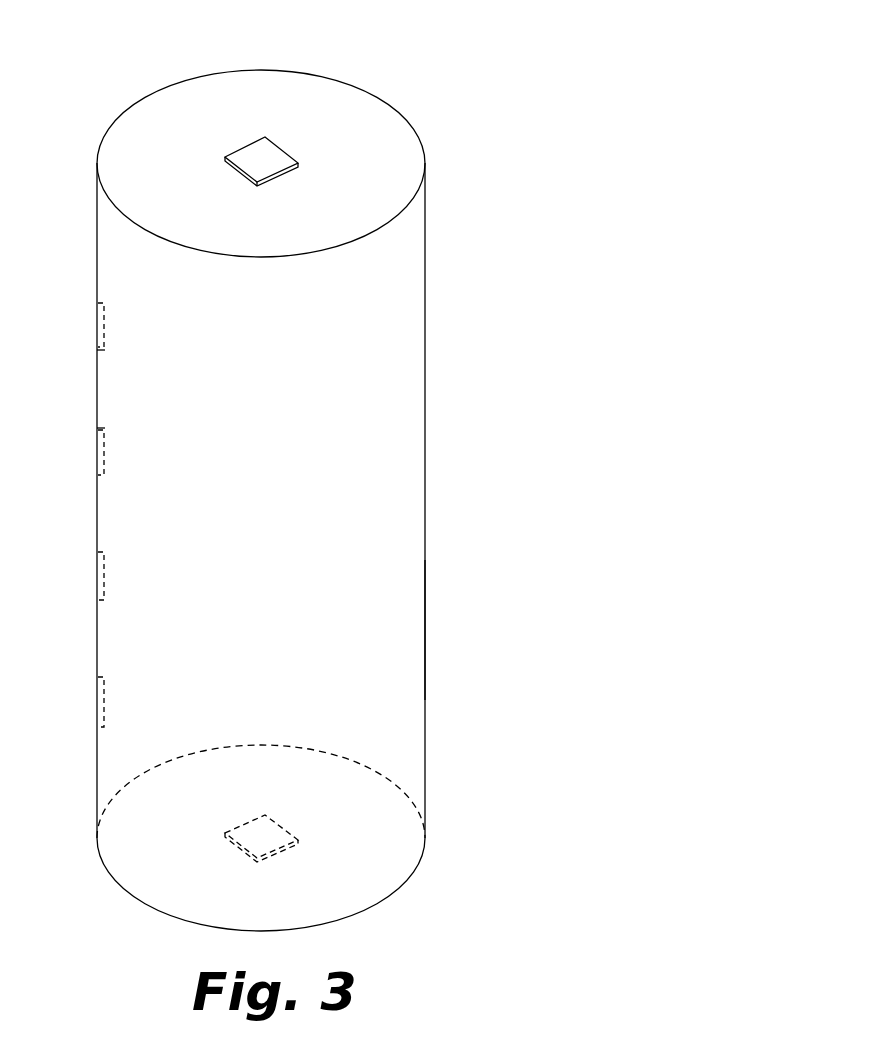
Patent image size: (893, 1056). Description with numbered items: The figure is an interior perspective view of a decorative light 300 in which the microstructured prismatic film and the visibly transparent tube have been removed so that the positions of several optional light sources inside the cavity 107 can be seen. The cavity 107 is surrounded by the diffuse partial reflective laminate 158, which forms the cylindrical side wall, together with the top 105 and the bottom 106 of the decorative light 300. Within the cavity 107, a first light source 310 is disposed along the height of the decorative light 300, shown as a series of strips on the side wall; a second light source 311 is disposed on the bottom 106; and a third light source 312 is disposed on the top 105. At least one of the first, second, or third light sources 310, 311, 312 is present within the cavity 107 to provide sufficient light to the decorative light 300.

The decorative light 300 is at (321, 476).
The top 105 is at (247, 93).
The third light source 312 is at (258, 157).
The cavity 107 is at (400, 423).
The diffuse partial reflective laminate 158 is at (425, 620).
The first light source 310 is at (104, 350).
The second light source 311 is at (253, 837).
The bottom 106 is at (387, 867).